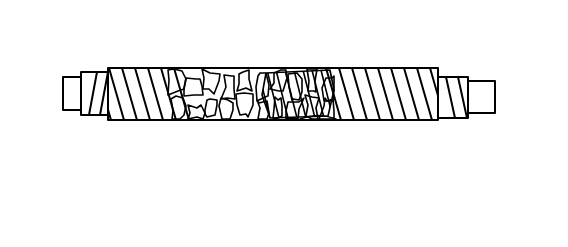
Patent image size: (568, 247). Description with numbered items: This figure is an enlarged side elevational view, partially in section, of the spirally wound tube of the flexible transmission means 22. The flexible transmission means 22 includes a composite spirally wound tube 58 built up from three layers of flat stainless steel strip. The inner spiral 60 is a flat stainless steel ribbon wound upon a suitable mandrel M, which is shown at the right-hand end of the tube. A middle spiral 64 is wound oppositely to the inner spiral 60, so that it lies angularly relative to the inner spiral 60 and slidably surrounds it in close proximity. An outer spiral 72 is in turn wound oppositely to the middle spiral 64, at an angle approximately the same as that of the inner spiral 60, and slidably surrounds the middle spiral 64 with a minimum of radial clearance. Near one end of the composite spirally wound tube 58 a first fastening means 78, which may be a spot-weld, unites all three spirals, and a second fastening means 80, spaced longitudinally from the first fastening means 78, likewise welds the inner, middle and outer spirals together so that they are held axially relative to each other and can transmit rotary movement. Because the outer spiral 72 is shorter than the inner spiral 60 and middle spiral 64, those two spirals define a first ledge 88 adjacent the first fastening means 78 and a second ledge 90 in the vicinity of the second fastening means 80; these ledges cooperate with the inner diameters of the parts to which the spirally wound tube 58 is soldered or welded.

The flexible transmission means 22 is at (205, 124).
The composite spirally wound tube 58 is at (375, 83).
The inner spiral 60 is at (210, 87).
The middle spiral 64 is at (282, 85).
The outer spiral 72 is at (317, 117).
The first fastening means 78 is at (123, 92).
The second fastening means 80 is at (437, 73).
The first ledge 88 is at (90, 70).
The second ledge 90 is at (465, 77).
The mandrel M is at (483, 108).